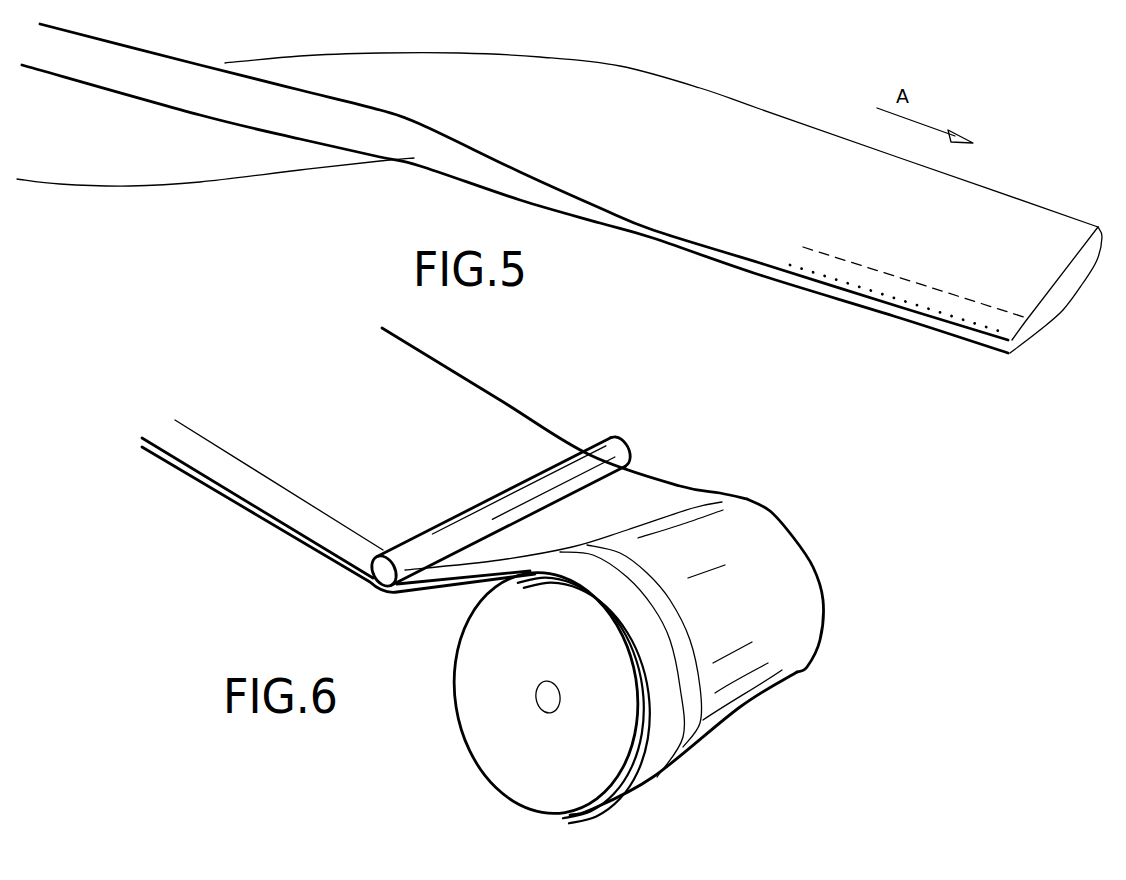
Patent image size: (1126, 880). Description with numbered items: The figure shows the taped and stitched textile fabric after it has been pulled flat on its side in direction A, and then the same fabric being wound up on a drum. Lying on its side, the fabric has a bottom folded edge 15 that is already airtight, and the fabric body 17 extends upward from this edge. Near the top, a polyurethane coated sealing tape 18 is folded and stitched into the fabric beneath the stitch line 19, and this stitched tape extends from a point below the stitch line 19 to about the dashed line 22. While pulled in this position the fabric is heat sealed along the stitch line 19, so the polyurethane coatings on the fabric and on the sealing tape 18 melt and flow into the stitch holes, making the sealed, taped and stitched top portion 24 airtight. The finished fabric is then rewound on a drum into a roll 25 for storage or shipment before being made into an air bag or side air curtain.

In FIG. 5, the bottom folded edge 15 is at (1017, 193).
In FIG. 5, the layer 17 is at (730, 215).
In FIG. 5, the polyurethane coated sealing tape 18 is at (1033, 315).
In FIG. 5, the stitch line 19 is at (942, 312).
In FIG. 5, the dashed line 22 is at (835, 260).
In FIG. 5, the sealed, taped, and stitched top portion 24 is at (857, 270).
In FIG. 6, the roll 25 is at (846, 577).